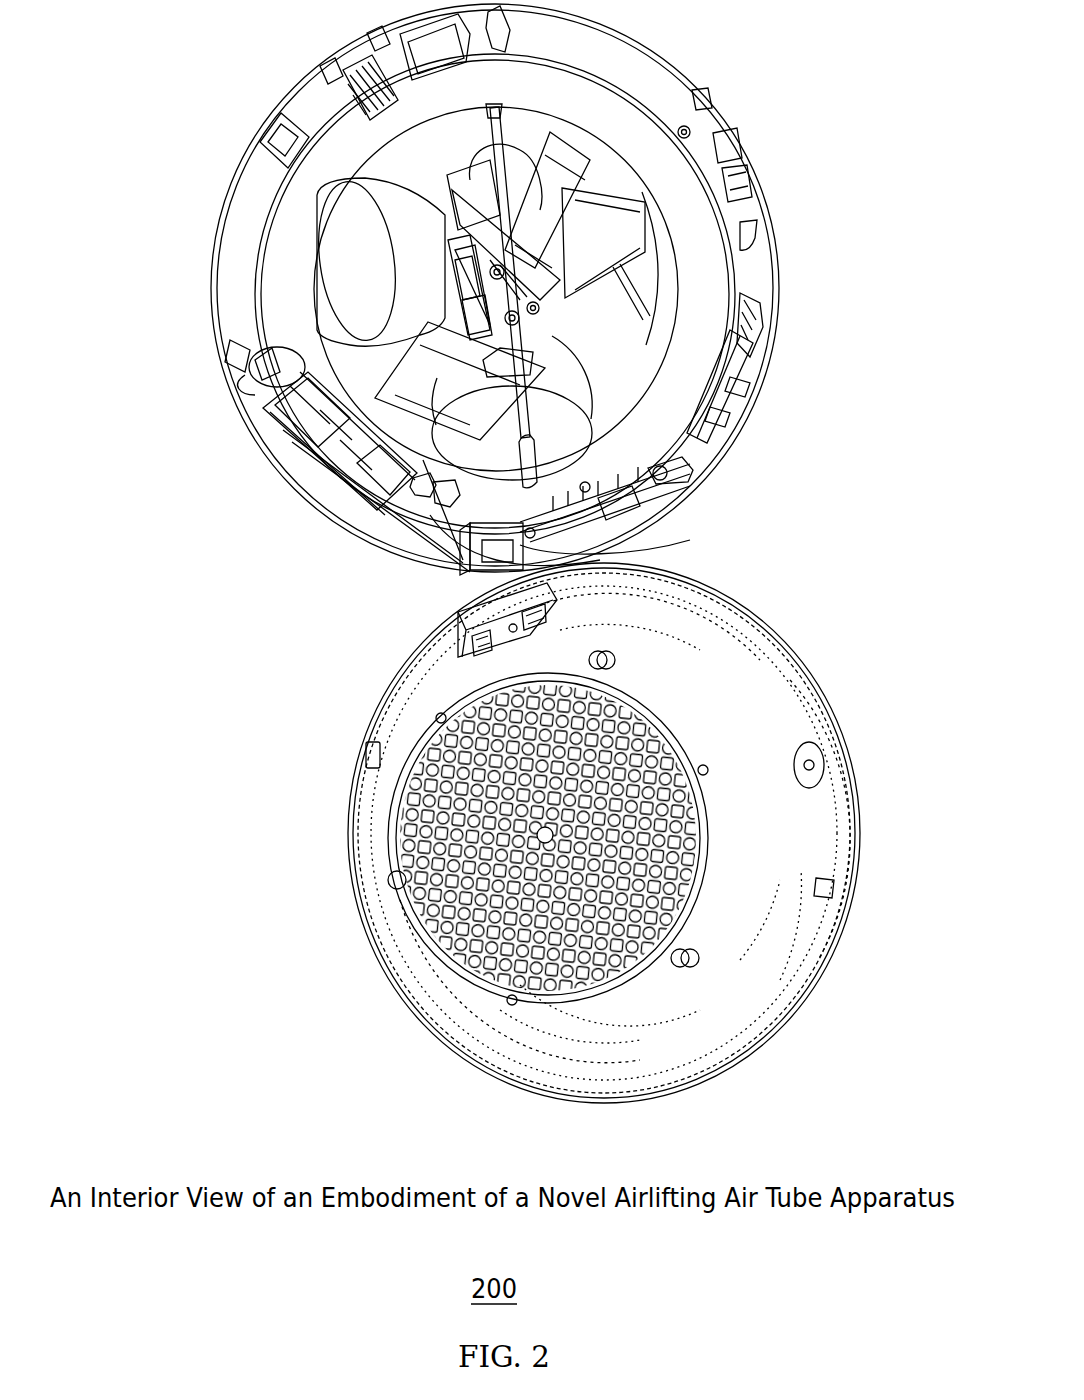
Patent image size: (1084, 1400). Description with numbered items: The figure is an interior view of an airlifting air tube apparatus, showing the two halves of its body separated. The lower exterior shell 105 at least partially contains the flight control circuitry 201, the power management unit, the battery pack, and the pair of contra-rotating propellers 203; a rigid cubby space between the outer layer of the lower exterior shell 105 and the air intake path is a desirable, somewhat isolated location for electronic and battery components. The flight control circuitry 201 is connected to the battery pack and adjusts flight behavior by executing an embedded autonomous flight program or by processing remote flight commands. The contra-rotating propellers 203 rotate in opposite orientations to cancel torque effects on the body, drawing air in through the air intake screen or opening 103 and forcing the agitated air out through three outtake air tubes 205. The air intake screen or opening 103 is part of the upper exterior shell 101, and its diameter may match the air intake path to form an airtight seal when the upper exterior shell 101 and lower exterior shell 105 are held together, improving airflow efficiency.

The upper exterior shell 101 is at (335, 840).
The air intake screen or opening 103 is at (443, 903).
The lower exterior shell 105 is at (222, 416).
The flight control circuitry 201 is at (343, 500).
The pair of contra-rotating propellers 203 is at (592, 230).
The outtake air tubes 205 is at (342, 264).